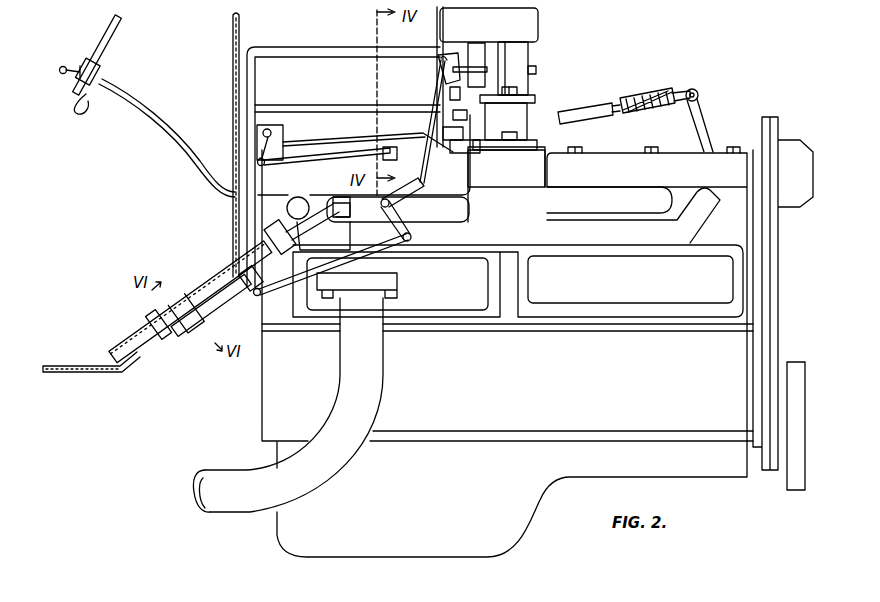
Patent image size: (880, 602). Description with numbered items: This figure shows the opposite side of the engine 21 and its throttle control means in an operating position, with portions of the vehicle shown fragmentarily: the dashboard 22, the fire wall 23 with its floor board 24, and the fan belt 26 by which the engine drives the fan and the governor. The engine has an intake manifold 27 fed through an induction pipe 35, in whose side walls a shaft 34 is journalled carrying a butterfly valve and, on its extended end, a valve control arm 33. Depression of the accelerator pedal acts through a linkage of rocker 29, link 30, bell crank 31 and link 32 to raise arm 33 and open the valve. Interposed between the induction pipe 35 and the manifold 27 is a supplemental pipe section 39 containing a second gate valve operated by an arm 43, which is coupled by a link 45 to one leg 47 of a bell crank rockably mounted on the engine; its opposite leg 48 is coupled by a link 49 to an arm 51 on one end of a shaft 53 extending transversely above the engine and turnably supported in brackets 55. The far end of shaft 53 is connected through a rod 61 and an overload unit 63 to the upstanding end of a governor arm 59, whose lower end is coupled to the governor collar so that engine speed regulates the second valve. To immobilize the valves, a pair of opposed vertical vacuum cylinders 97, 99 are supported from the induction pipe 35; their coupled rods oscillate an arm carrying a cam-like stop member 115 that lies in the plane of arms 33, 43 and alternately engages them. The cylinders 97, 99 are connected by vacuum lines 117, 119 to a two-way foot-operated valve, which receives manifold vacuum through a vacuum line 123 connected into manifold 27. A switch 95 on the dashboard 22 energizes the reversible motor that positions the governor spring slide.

The engine 21 is at (270, 404).
The dashboard 22 is at (120, 27).
The fire wall 23 is at (233, 86).
The floor board 24 is at (46, 362).
The fan belt 26 is at (775, 245).
The intake manifold 27 is at (527, 182).
The rocker 29 is at (232, 268).
The link 30 is at (268, 296).
The bell crank 31 is at (408, 203).
The link 32 is at (452, 92).
The valve control arm 33 is at (455, 60).
The shaft 34 is at (543, 75).
The induction pipe 35 is at (516, 54).
The supplemental pipe section 39 is at (520, 137).
The arm 43 is at (486, 124).
The link 45 is at (463, 150).
The leg 47 is at (445, 156).
The leg 48 is at (385, 160).
The link 49 is at (345, 162).
The arm 51 is at (284, 147).
The shaft 53 is at (284, 136).
The brackets 55 is at (282, 128).
The governor arm 59 is at (705, 108).
The rod 61 is at (418, 133).
The overload unit 63 is at (616, 95).
The switch 95 is at (55, 68).
The vacuum cylinder 97 is at (437, 40).
The vacuum cylinder 99 is at (470, 168).
The cam-like stop member 115 is at (450, 100).
The vacuum line 117 is at (355, 52).
The vacuum line 119 is at (362, 106).
The vacuum line 123 is at (305, 215).